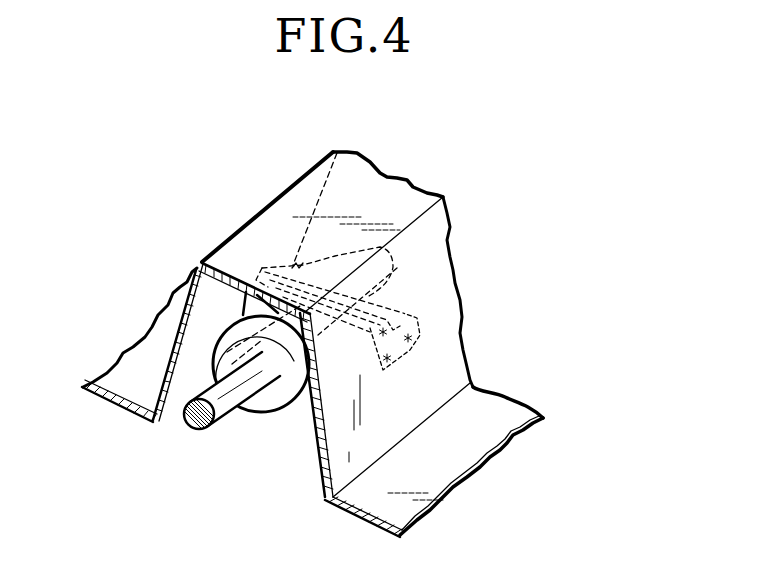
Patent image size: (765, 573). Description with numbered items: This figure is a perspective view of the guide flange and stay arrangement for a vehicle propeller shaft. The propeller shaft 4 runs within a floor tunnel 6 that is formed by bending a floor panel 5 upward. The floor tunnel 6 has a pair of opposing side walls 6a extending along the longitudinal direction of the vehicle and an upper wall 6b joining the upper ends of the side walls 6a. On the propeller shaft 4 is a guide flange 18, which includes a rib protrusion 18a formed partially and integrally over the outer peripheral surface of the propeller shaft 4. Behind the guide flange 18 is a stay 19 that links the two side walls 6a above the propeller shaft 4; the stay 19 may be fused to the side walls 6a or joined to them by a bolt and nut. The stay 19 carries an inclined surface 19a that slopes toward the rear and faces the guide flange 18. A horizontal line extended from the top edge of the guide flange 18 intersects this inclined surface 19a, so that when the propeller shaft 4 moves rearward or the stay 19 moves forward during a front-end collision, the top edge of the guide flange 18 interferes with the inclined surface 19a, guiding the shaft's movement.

The propeller shaft 4 is at (222, 421).
The floor panel 5 is at (494, 402).
The floor tunnel 6 is at (394, 182).
The side walls 6a is at (191, 298).
The upper wall 6b is at (303, 191).
The guide flange 18 is at (249, 425).
The rib protrusion 18a is at (275, 398).
The stay 19 is at (412, 308).
The inclined surface 19a is at (297, 265).